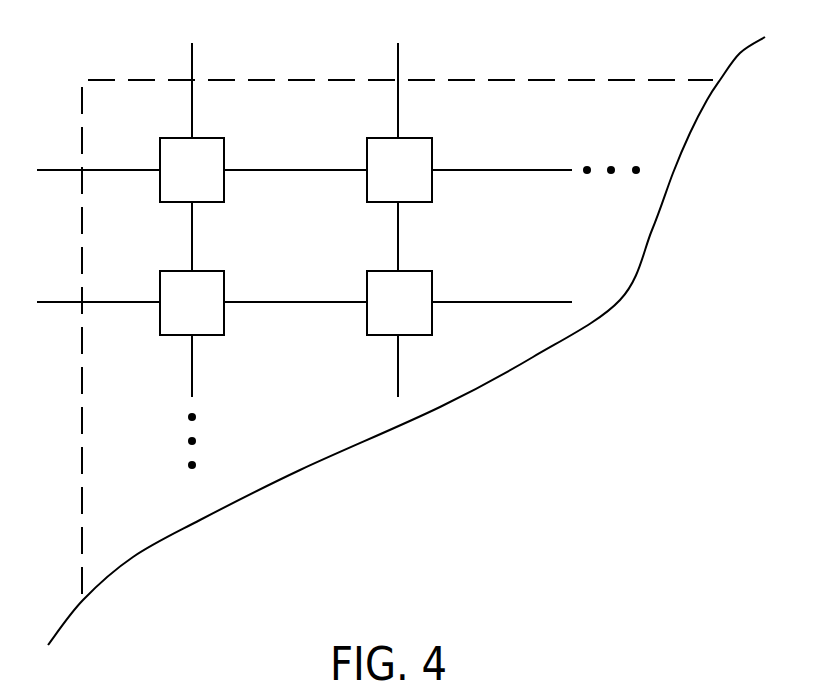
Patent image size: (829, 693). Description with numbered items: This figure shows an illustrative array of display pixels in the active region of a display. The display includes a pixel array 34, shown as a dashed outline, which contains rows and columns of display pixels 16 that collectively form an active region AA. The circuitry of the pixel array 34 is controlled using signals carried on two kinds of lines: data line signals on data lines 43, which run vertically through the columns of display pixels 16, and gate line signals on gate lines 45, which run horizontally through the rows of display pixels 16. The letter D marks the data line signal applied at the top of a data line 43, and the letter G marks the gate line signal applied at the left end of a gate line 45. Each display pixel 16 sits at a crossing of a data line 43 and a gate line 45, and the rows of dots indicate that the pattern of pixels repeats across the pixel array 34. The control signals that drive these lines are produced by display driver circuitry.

The display pixels 16 is at (173, 196).
The pixel array 34 is at (295, 80).
The data lines 43 is at (192, 63).
The gate lines 45 is at (58, 172).
The active region AA is at (535, 105).
The data signal D is at (192, 26).
The gate signal G is at (21, 175).